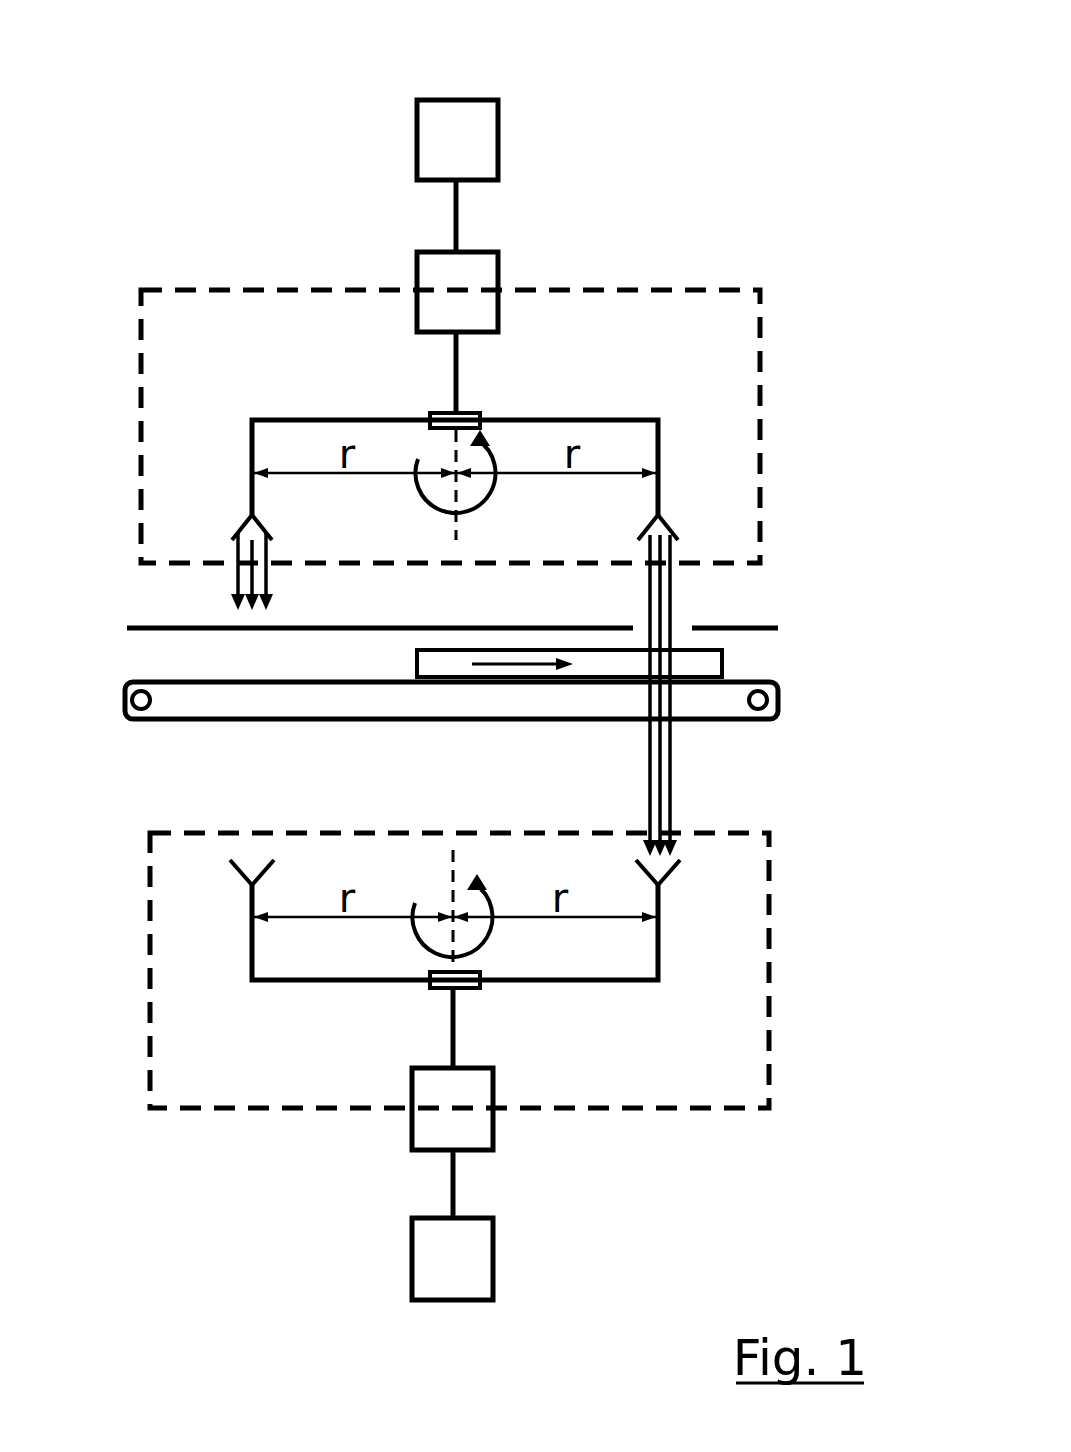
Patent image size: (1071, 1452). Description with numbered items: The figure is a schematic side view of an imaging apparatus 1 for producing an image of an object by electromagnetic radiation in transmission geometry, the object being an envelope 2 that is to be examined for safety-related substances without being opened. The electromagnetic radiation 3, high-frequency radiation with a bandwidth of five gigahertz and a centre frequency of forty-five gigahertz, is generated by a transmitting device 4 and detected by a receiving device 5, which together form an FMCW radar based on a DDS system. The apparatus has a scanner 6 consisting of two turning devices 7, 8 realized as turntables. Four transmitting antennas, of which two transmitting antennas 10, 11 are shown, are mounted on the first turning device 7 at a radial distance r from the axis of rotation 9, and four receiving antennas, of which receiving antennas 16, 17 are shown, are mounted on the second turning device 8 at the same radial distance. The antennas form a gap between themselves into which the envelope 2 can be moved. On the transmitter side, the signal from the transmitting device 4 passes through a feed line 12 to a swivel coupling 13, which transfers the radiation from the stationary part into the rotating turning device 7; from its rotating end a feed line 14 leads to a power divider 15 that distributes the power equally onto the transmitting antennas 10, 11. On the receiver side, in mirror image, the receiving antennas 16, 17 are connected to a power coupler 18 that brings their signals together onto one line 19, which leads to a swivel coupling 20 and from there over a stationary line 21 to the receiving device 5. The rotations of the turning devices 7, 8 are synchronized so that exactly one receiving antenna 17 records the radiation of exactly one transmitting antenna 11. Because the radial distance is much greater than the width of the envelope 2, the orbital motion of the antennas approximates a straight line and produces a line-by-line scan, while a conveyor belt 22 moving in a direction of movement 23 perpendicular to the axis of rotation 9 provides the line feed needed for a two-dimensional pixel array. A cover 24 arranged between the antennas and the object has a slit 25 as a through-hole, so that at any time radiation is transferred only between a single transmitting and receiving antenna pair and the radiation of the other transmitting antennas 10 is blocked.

The imaging apparatus 1 is at (756, 151).
The envelope 2 is at (430, 660).
The electromagnetic radiation 3 is at (672, 598).
The transmitting device 4 is at (483, 138).
The receiving device 5 is at (493, 1262).
The scanner 6 is at (874, 990).
The first turning device 7 is at (765, 463).
The second turning device 8 is at (769, 1067).
The axis of rotation 9 is at (453, 450).
The transmitting antenna 10 is at (232, 535).
The transmitting antenna 11 is at (672, 530).
The feed line 12 is at (458, 216).
The swivel coupling 13 is at (498, 265).
The feed line 14 is at (458, 370).
The power divider 15 is at (440, 415).
The receiving antenna 16 is at (232, 862).
The receiving antenna 17 is at (678, 870).
The power coupler 18 is at (432, 987).
The line 19 is at (450, 1040).
The swivel coupling 20 is at (472, 1128).
The stationary line 21 is at (455, 1183).
The conveyor belt 22 is at (188, 710).
The direction of movement 23 is at (515, 665).
The cover 24 is at (145, 628).
The slit 25 is at (684, 640).